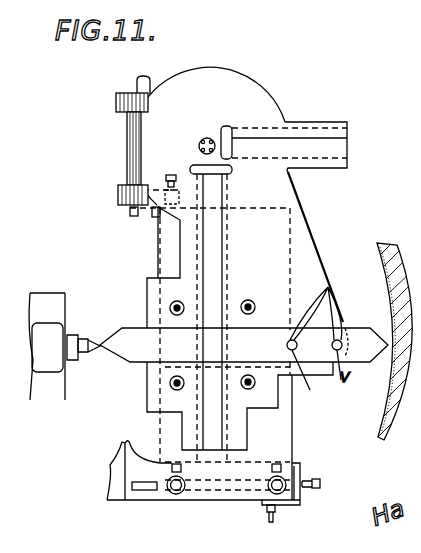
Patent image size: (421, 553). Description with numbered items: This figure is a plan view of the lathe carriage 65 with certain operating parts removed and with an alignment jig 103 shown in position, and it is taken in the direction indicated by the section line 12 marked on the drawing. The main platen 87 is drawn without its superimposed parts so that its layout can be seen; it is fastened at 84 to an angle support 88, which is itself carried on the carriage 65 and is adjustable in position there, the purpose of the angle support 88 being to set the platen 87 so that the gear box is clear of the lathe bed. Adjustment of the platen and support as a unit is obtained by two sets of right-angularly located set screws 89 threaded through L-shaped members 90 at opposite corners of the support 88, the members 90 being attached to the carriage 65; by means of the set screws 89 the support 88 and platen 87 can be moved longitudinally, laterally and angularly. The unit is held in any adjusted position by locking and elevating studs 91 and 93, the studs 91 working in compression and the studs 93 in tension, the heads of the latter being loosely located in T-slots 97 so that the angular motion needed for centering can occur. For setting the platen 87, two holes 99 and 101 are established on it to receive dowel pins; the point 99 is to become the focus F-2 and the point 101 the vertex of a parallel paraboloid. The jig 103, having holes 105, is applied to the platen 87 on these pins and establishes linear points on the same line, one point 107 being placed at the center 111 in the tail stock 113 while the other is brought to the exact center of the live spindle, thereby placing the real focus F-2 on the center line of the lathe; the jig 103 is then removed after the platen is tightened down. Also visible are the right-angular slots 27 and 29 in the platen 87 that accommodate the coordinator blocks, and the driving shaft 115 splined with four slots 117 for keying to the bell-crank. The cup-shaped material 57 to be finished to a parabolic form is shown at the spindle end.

The section line 12 is at (103, 364).
The right-angular slot 27 is at (303, 138).
The right-angular slot 29 is at (213, 241).
The material 57 is at (382, 288).
The carriage 65 is at (110, 492).
The fastening 84 is at (258, 396).
The main platen 87 is at (307, 246).
The angle support 88 is at (292, 436).
The set screws 89 is at (165, 176).
The L-shaped members 90 is at (143, 198).
The locking and elevating studs 91 is at (172, 466).
The locking and elevating studs 93 is at (176, 494).
The T-slots 97 is at (143, 490).
The hole 99 is at (298, 350).
The hole 101 is at (347, 310).
The jig 103 is at (270, 322).
The holes 105 is at (323, 302).
The linear point 107 is at (103, 344).
The center 111 is at (86, 340).
The tail stock 113 is at (48, 337).
The driving shaft 115 is at (203, 138).
The slots 117 is at (199, 150).
The focus F-2 is at (315, 406).